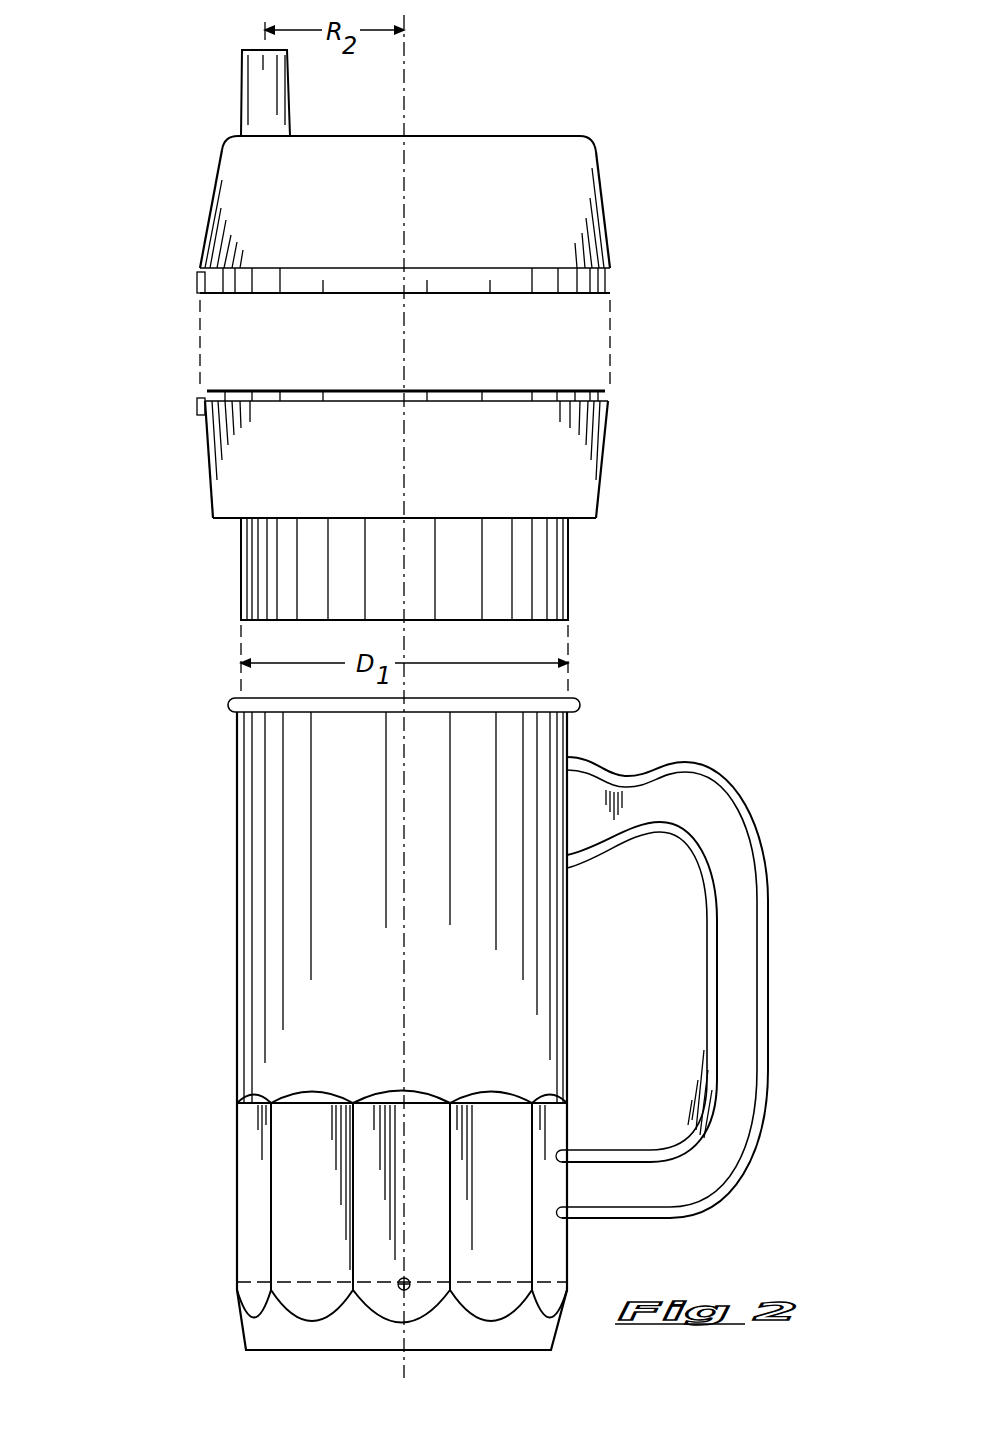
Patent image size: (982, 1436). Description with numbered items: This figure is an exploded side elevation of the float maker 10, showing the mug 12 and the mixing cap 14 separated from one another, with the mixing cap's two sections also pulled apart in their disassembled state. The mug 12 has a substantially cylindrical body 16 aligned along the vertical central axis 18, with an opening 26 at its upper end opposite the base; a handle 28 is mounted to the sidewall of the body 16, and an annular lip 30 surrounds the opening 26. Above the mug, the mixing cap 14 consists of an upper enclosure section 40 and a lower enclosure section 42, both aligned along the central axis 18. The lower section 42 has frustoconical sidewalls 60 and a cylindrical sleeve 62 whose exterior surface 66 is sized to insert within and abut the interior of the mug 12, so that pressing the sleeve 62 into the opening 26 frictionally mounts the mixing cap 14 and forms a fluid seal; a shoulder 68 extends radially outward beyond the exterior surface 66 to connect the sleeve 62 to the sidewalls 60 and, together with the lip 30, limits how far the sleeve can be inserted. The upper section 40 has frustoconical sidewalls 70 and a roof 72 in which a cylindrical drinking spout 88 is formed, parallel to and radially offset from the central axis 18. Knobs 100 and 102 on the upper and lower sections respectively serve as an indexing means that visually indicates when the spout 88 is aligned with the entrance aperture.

The float maker 10 is at (728, 432).
The mug 12 is at (195, 808).
The mixing cap 14 is at (165, 340).
The body 16 is at (236, 858).
The central axis 18 is at (408, 106).
The opening 26 is at (448, 672).
The handle 28 is at (760, 818).
The annular lip 30 is at (582, 700).
The upper enclosure section 40 is at (610, 222).
The lower enclosure section 42 is at (205, 472).
The frustoconical sidewalls 60 is at (590, 473).
The cylindrical sleeve 62 is at (268, 598).
The exterior surface 66 is at (570, 590).
The shoulder 68 is at (580, 522).
The frustoconical sidewalls 70 is at (585, 168).
The roof 72 is at (510, 137).
The drinking spout 88 is at (290, 130).
The knob 100 is at (197, 276).
The knob 102 is at (197, 410).